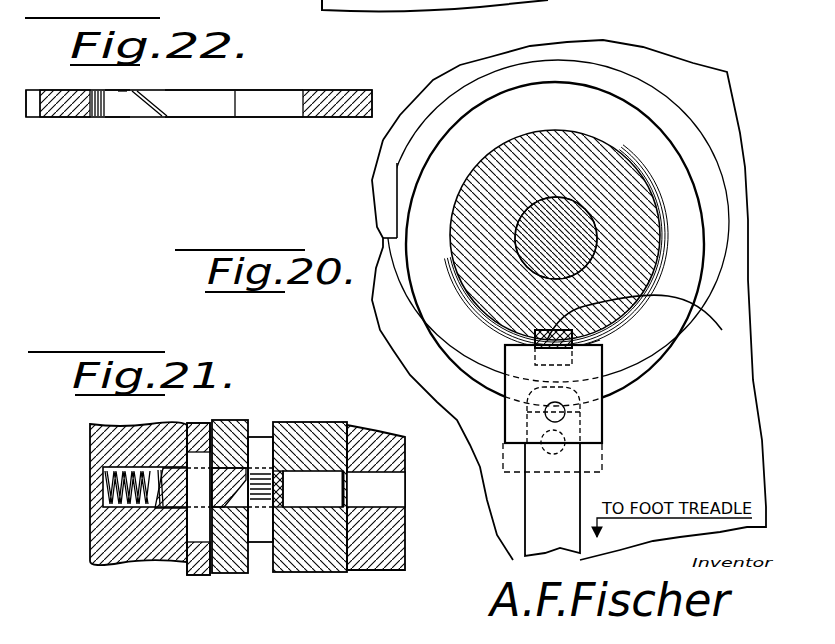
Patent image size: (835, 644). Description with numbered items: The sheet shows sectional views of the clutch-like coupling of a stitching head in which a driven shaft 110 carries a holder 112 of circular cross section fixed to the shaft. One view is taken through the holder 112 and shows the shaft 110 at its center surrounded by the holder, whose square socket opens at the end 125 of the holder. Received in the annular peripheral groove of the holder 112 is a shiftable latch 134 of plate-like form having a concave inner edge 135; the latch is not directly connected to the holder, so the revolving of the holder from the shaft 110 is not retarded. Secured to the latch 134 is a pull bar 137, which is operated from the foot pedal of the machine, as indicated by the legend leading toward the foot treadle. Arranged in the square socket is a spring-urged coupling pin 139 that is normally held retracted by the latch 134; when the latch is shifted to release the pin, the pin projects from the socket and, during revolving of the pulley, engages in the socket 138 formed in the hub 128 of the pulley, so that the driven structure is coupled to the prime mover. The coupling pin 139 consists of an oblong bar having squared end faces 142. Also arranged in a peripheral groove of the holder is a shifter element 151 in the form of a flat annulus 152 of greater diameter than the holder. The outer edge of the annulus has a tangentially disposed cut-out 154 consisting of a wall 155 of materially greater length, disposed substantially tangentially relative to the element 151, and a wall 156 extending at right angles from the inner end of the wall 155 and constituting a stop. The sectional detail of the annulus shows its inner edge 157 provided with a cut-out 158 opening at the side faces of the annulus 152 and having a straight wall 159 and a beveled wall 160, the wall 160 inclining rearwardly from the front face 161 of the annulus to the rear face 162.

In FIG. 20, the driven shaft 110 is at (556, 213).
In FIG. 20, the holder 112 is at (662, 240).
In FIG. 20, the end of the holder 125 is at (703, 322).
In FIG. 21, the hub 128 is at (382, 558).
In FIG. 20, the shiftable latch 134 is at (603, 413).
In FIG. 20, the concave inner edge 135 is at (586, 345).
In FIG. 20, the pull bar 137 is at (579, 496).
In FIG. 21, the socket 138 is at (376, 489).
In FIG. 20, the coupling pin 139 is at (522, 336).
In FIG. 21, the coupling pin 139 is at (326, 497).
In FIG. 21, the squared end faces 142 is at (147, 481).
In FIG. 22, the shifter element 151 is at (343, 89).
In FIG. 20, the shifter element 151 is at (688, 127).
In FIG. 21, the shifter element 151 is at (196, 573).
In FIG. 22, the flat annulus 152 is at (372, 103).
In FIG. 20, the flat annulus 152 is at (703, 174).
In FIG. 20, the tangentially disposed cut-out 154 is at (395, 192).
In FIG. 20, the wall 155 is at (398, 205).
In FIG. 22, the wall 156 is at (33, 108).
In FIG. 20, the wall 156 is at (383, 244).
In FIG. 22, the inner edge 157 is at (127, 108).
In FIG. 20, the inner edge 157 is at (455, 266).
In FIG. 21, the inner edge 157 is at (171, 488).
In FIG. 22, the cut-out 158 is at (208, 116).
In FIG. 21, the cut-out 158 is at (232, 573).
In FIG. 22, the straight wall 159 is at (233, 106).
In FIG. 21, the straight wall 159 is at (200, 452).
In FIG. 22, the beveled wall 160 is at (153, 118).
In FIG. 22, the front face 161 is at (100, 118).
In FIG. 22, the rear face 162 is at (120, 90).